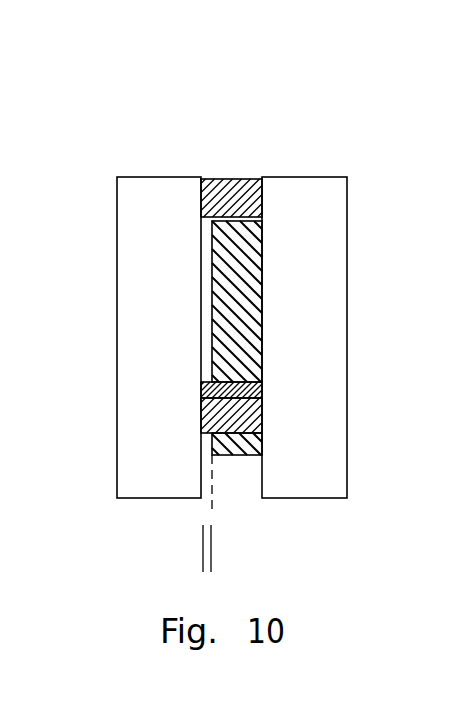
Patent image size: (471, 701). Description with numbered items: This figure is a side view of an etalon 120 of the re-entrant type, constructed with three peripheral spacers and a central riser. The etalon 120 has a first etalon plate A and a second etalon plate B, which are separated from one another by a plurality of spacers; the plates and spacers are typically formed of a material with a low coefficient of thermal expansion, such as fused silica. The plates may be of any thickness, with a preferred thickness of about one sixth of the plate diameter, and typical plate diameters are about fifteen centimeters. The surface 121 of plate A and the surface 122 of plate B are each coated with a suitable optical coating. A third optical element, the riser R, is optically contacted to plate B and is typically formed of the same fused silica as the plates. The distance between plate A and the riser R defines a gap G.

The etalon 120 is at (152, 128).
The surface of plate A 121 is at (117, 340).
The surface of plate B 122 is at (345, 338).
The first etalon plate A is at (124, 284).
The second etalon plate B is at (365, 284).
The riser R is at (233, 455).
The gap G is at (205, 573).